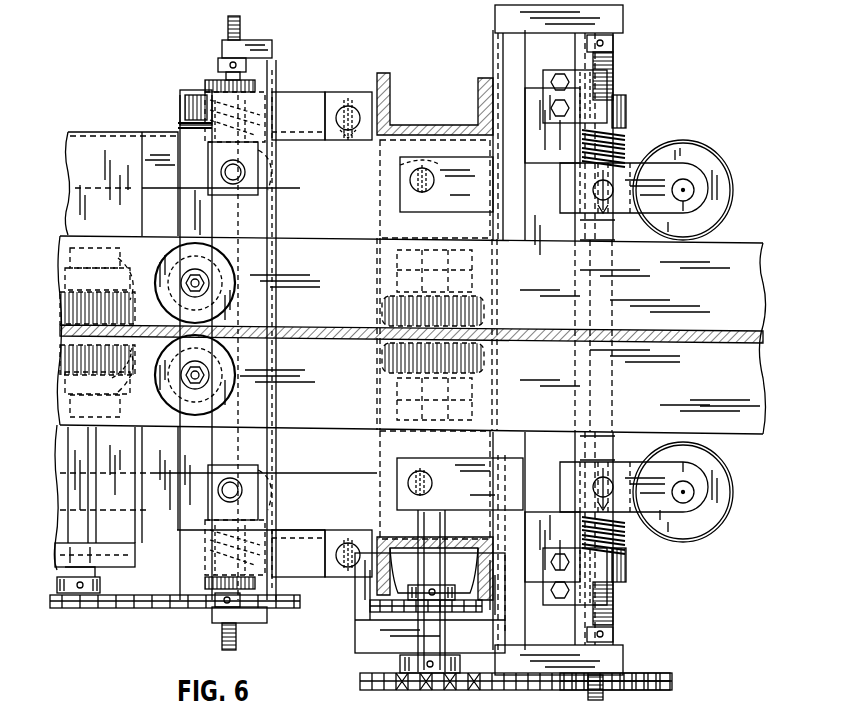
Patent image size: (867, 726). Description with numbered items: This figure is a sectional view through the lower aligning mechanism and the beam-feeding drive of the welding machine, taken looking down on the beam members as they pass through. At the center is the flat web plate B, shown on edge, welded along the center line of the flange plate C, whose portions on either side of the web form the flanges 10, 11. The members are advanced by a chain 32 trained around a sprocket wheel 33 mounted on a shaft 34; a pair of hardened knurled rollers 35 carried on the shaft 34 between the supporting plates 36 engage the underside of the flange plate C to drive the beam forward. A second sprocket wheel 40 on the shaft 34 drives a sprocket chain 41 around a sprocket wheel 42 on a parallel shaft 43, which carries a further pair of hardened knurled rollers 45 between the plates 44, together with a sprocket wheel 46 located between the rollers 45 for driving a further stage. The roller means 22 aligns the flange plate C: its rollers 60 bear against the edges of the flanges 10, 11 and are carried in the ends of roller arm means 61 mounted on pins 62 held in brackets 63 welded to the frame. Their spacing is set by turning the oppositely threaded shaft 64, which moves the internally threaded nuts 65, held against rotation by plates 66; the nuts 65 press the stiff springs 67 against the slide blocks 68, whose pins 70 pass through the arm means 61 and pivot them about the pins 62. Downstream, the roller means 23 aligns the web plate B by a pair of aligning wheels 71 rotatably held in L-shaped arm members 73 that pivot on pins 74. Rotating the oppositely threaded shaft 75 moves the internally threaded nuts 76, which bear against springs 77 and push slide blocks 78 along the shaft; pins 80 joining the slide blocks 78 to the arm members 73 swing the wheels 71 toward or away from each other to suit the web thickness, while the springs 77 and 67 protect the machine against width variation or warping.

The flange 10 is at (763, 272).
The flange 11 is at (765, 394).
The web plate B is at (762, 335).
The flange plate C is at (763, 306).
The roller means 22 is at (722, 163).
The roller means 23 is at (288, 618).
The chain 32 is at (548, 692).
The sprocket wheel 33 is at (400, 663).
The shaft 34 is at (438, 582).
The hardened knurled rollers 35 is at (484, 312).
The plates 36 is at (472, 255).
The sprocket wheel 40 is at (407, 586).
The sprocket chain 41 is at (180, 610).
The sprocket wheel 42 is at (100, 587).
The shaft 43 is at (95, 555).
The plates 44 is at (113, 248).
The hardened knurled rollers 45 is at (104, 338).
The sprocket wheel 46 is at (113, 372).
The rollers 60 is at (733, 200).
The roller arm means 61 is at (542, 162).
The pins 62 is at (412, 195).
The brackets 63 is at (500, 448).
The shaft 64 is at (620, 624).
The internally threaded nuts 65 is at (626, 110).
The plates 66 is at (573, 67).
The springs 67 is at (622, 141).
The slide blocks 68 is at (617, 244).
The pins 70 is at (593, 190).
The aligning wheels 71 is at (233, 280).
The arm members 73 is at (290, 90).
The pins 74 is at (343, 98).
The shaft 75 is at (228, 24).
The internally threaded nuts 76 is at (214, 86).
The springs 77 is at (265, 118).
The slide blocks 78 is at (250, 190).
The pins 80 is at (245, 172).